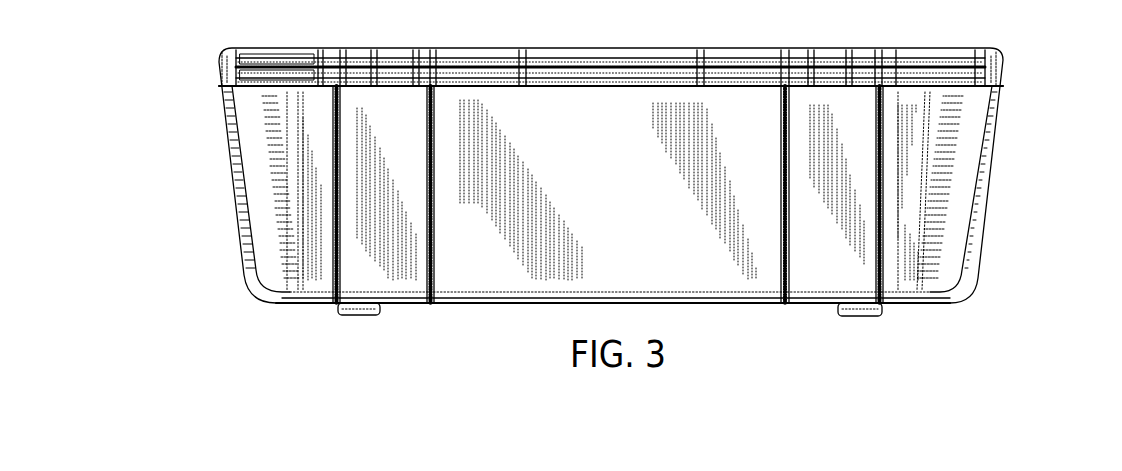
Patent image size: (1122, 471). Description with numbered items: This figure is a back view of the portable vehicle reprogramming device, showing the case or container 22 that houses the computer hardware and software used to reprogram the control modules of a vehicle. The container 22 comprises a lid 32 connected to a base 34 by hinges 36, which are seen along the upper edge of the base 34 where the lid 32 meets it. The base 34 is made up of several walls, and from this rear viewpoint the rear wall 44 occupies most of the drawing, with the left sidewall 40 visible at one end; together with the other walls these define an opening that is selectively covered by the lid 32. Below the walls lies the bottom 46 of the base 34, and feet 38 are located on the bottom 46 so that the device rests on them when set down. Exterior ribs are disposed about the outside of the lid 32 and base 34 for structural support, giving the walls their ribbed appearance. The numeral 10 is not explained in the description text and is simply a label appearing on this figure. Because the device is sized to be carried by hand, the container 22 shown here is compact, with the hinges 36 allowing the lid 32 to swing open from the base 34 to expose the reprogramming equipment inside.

The container tray 10 is at (1100, 2).
The container 22 is at (214, 45).
The lid 32 is at (288, 46).
The base 34 is at (272, 212).
The hinges 36 is at (333, 66).
The feet 38 is at (358, 318).
The left sidewall 40 is at (990, 168).
The rear wall 44 is at (572, 218).
The bottom 46 is at (760, 305).